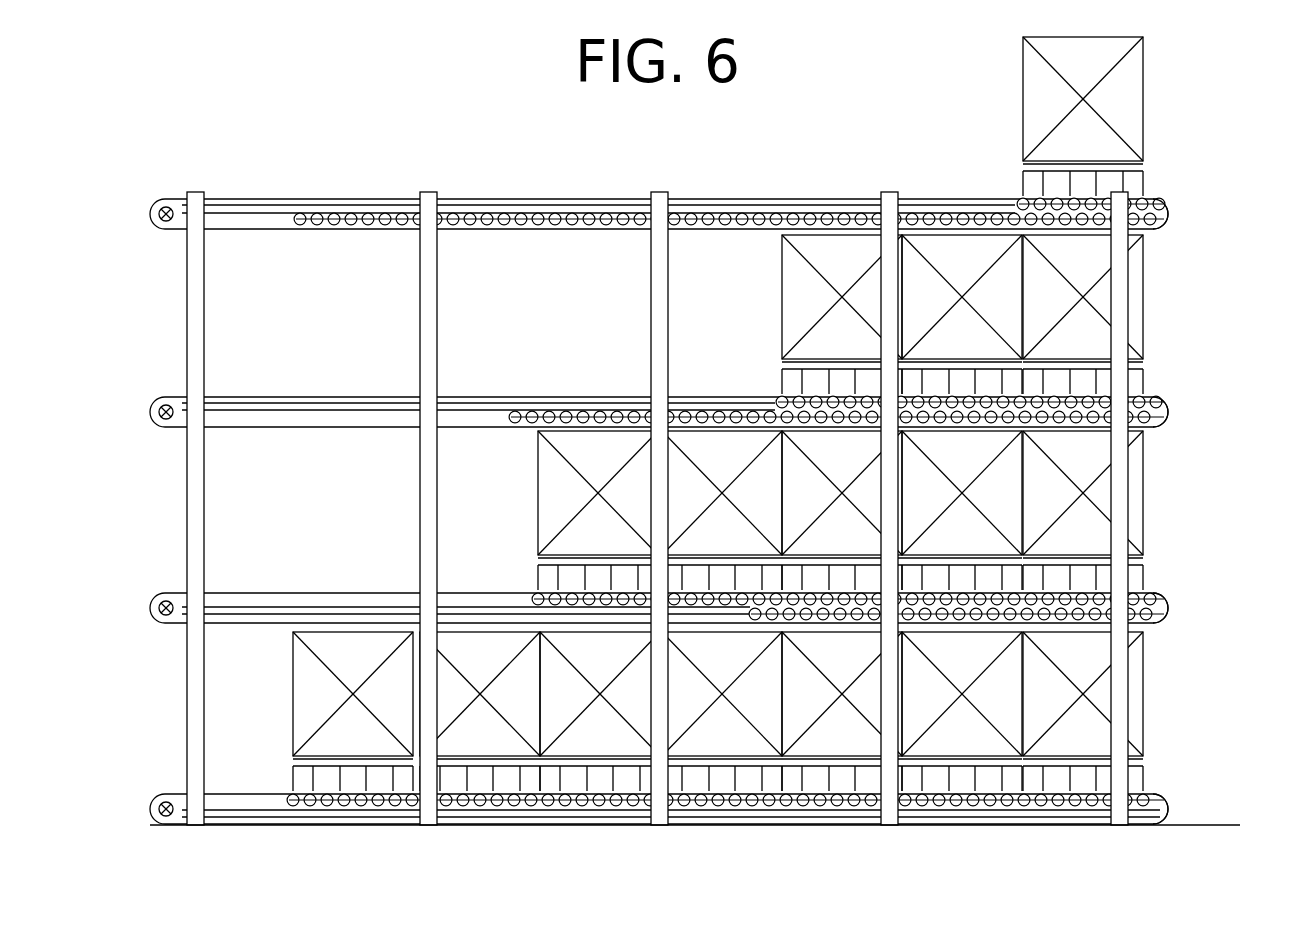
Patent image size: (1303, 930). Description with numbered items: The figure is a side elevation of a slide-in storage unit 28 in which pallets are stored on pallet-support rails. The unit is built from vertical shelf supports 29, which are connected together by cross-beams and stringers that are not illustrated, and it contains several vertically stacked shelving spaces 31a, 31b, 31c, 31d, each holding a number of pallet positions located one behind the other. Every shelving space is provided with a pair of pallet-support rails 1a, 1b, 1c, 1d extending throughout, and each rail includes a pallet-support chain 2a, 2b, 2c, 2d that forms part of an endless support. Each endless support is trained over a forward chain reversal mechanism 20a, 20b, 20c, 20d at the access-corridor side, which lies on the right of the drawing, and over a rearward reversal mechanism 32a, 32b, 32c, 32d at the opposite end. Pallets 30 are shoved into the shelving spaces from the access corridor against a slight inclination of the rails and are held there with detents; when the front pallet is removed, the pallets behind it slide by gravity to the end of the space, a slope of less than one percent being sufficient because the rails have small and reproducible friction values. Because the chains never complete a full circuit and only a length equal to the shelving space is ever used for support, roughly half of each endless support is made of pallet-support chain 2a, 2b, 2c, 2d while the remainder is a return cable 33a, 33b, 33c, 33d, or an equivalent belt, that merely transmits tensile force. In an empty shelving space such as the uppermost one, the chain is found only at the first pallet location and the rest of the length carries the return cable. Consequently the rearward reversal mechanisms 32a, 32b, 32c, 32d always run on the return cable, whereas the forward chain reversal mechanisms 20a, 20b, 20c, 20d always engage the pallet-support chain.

The pallet-support rail 1a is at (245, 198).
The pallet-support rail 1b is at (267, 395).
The pallet-support rail 1c is at (260, 593).
The pallet-support rail 1d is at (238, 795).
The pallet-support chain 2a is at (732, 213).
The pallet-support chain 2b is at (693, 413).
The pallet-support chain 2c is at (555, 590).
The pallet-support chain 2d is at (562, 807).
The forward chain reversal mechanism 20a is at (1160, 205).
The forward chain reversal mechanism 20b is at (1170, 410).
The forward chain reversal mechanism 20c is at (1170, 607).
The forward chain reversal mechanism 20d is at (1170, 805).
The slide-in storage unit 28 is at (156, 468).
The vertical shelf supports 29 is at (650, 193).
The pallet 30 is at (1047, 99).
The shelving space 31a is at (1178, 113).
The shelving space 31b is at (1178, 310).
The shelving space 31c is at (1178, 500).
The shelving space 31d is at (1178, 695).
The rearward reversal mechanism 32a is at (158, 203).
The rearward reversal mechanism 32b is at (157, 402).
The rearward reversal mechanism 32c is at (158, 598).
The rearward reversal mechanism 32d is at (158, 798).
The return cable 33a is at (370, 213).
The return cable 33b is at (497, 405).
The return cable 33c is at (342, 603).
The return cable 33d is at (747, 813).